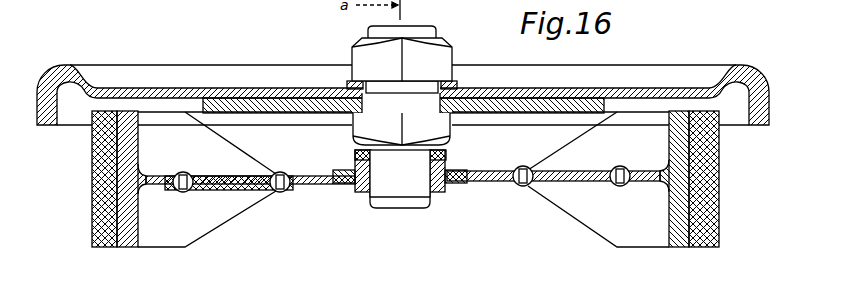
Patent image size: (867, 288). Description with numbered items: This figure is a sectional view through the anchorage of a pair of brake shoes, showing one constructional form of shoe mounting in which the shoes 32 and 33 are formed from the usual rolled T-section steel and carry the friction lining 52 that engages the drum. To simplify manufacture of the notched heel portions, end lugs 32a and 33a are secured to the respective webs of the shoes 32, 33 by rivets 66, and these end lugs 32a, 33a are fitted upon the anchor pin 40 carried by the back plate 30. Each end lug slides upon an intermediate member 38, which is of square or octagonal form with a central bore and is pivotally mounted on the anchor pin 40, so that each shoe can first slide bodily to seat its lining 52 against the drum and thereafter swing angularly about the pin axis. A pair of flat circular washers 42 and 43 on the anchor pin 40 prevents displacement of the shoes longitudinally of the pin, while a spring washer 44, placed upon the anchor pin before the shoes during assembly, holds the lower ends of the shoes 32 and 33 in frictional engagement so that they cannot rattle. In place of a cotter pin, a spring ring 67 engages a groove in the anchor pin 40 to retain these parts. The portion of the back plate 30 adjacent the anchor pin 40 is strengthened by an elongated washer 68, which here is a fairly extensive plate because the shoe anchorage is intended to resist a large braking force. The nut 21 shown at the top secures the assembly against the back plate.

The upper nut 21 is at (425, 60).
The back plate 30 is at (238, 88).
The elongated washer 68 is at (296, 106).
The leading shoe 32 is at (166, 227).
The shoe 33 is at (637, 213).
The lining 52 is at (108, 247).
The end lug 32a is at (296, 190).
The end lug 33a is at (490, 180).
The rivets 66 is at (270, 192).
The anchor pin 40 is at (402, 173).
The flat circular washer 42 is at (353, 163).
The spring washer 44 is at (447, 152).
The flat circular washer 43 is at (354, 186).
The intermediate member 38 is at (453, 188).
The spring ring 67 is at (441, 200).